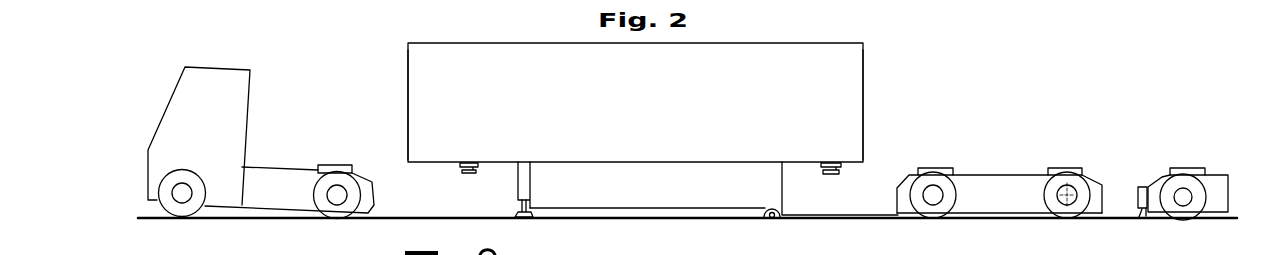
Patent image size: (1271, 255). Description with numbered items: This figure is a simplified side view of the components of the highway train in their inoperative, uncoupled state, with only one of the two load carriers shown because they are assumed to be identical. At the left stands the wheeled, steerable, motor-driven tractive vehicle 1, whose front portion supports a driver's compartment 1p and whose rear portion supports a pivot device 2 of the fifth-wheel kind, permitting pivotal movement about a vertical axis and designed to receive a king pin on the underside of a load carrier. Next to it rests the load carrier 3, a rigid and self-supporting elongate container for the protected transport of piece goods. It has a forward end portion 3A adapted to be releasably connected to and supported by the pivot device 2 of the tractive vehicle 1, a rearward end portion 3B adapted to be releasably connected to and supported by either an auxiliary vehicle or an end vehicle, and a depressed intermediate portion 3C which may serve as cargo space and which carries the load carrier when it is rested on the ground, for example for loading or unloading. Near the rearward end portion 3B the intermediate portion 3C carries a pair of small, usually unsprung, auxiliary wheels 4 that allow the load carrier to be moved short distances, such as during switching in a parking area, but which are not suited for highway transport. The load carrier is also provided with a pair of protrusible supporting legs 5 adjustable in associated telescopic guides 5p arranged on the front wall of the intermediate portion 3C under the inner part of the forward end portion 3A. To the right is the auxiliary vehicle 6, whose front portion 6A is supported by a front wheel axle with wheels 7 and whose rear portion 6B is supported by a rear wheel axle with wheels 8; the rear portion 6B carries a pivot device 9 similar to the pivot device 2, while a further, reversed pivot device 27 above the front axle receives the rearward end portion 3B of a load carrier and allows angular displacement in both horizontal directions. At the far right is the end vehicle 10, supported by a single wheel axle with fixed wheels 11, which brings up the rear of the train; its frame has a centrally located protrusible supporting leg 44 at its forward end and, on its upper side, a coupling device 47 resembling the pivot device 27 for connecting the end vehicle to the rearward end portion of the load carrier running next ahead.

The tractive vehicle 1 is at (258, 130).
The driver's compartment 1p is at (172, 103).
The pivot device 2 is at (330, 166).
The load carrier 3 is at (633, 110).
The forward end portion 3A is at (422, 72).
The rearward end portion 3B is at (850, 68).
The depressed intermediate portion 3C is at (643, 190).
The auxiliary wheels 4 is at (781, 217).
The supporting legs 5 is at (513, 213).
The telescopic guides 5p is at (518, 185).
The auxiliary vehicle 6 is at (995, 180).
The front portion 6A is at (900, 186).
The rear portion 6B is at (1098, 188).
The further pivot device 27 is at (938, 168).
The pivot device 9 is at (1060, 168).
The front wheels 7 is at (937, 210).
The rear wheels 8 is at (1075, 208).
The end vehicle 10 is at (1180, 180).
The coupling device 47 is at (1183, 168).
The wheels 11 is at (1193, 207).
The supporting leg 44 is at (1142, 215).